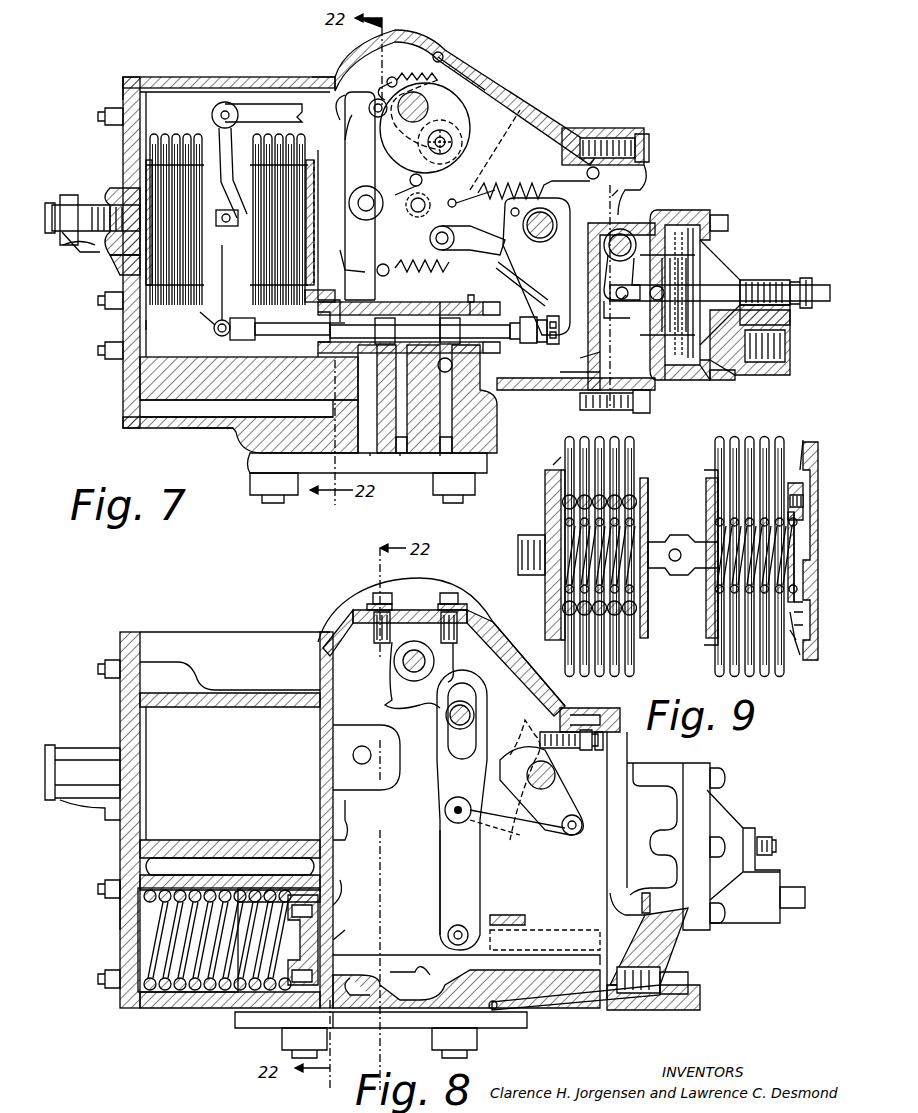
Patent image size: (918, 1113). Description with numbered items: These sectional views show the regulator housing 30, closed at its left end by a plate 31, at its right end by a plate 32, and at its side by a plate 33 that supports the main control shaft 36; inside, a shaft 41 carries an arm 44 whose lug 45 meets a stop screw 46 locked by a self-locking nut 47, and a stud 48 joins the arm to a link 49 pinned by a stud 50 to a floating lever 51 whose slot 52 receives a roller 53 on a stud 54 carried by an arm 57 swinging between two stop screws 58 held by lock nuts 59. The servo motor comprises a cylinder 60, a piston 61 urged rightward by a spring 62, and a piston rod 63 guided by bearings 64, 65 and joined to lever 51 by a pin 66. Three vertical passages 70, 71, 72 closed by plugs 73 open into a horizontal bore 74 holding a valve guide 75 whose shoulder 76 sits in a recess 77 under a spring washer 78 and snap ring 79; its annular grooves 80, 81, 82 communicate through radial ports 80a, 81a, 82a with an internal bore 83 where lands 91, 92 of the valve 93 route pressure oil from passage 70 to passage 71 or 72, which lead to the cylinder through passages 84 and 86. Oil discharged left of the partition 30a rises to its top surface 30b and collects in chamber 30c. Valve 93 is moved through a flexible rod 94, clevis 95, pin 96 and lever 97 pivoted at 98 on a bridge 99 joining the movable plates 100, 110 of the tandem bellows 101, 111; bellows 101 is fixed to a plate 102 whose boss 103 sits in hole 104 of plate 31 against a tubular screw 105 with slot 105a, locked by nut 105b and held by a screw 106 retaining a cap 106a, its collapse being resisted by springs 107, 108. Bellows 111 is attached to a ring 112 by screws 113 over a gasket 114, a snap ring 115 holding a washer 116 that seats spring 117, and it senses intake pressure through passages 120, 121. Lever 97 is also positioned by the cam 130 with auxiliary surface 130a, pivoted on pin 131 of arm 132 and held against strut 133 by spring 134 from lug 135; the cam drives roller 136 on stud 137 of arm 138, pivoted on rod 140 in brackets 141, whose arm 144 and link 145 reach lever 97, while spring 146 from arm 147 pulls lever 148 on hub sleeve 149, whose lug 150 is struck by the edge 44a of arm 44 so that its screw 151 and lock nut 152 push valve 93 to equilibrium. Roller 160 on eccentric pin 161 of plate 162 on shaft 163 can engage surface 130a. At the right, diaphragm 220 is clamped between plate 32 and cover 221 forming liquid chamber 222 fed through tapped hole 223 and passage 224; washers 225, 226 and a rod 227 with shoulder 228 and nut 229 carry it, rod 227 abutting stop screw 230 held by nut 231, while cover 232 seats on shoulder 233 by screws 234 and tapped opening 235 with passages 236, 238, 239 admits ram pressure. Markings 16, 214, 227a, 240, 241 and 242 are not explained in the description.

In FIG. 7, the section line 16 is at (627, 197).
In FIG. 7, the housing 30 is at (510, 392).
In FIG. 8, the housing 30 is at (150, 1008).
In FIG. 7, the housing wall 30a is at (361, 196).
In FIG. 9, the housing wall 30a is at (815, 442).
In FIG. 7, the housing top 30b is at (330, 80).
In FIG. 7, the housing wall 30c is at (150, 325).
In FIG. 7, the housing end wall 31 is at (138, 80).
In FIG. 8, the housing end wall 31 is at (120, 932).
In FIG. 7, the housing body 32 is at (636, 132).
In FIG. 8, the housing body 32 is at (635, 1005).
In FIG. 8, the cover 33 is at (512, 644).
In FIG. 8, the pivot shaft 36 is at (395, 668).
In FIG. 7, the lever pivot 41 is at (560, 205).
In FIG. 8, the lever pivot 41 is at (555, 770).
In FIG. 8, the lever 44 is at (568, 788).
In FIG. 7, the spring 44a is at (538, 186).
In FIG. 8, the lever arm 45 is at (517, 780).
In FIG. 8, the boss 46 is at (568, 708).
In FIG. 8, the screw head 47 is at (594, 748).
In FIG. 8, the pin 48 is at (576, 835).
In FIG. 8, the link 49 is at (515, 835).
In FIG. 8, the pin 50 is at (445, 812).
In FIG. 8, the link 51 is at (440, 845).
In FIG. 8, the bearing 52 is at (450, 725).
In FIG. 8, the link 53 is at (470, 690).
In FIG. 8, the pin 54 is at (450, 715).
In FIG. 8, the arm 57 is at (450, 658).
In FIG. 8, the screw head 58 is at (378, 592).
In FIG. 8, the screw 59 is at (372, 605).
In FIG. 8, the spring 60 is at (215, 992).
In FIG. 8, the spring seat 61 is at (296, 897).
In FIG. 8, the spring retainer 62 is at (200, 895).
In FIG. 8, the wall 63 is at (340, 935).
In FIG. 8, the wall 64 is at (336, 905).
In FIG. 8, the stop 65 is at (528, 912).
In FIG. 8, the pin 66 is at (460, 946).
In FIG. 7, the body 70 is at (398, 375).
In FIG. 7, the body 71 is at (368, 378).
In FIG. 7, the body 72 is at (465, 378).
In FIG. 7, the passages 73 is at (396, 463).
In FIG. 7, the valve stem 74 is at (420, 330).
In FIG. 7, the valve 75 is at (448, 310).
In FIG. 7, the rod 76 is at (318, 315).
In FIG. 7, the wall 77 is at (318, 353).
In FIG. 7, the wall 78 is at (493, 344).
In FIG. 7, the seat 79 is at (497, 305).
In FIG. 7, the plate 80 is at (420, 302).
In FIG. 7, the plate 80a is at (402, 302).
In FIG. 7, the plate 81 is at (400, 315).
In FIG. 7, the plate 81a is at (331, 289).
In FIG. 7, the valve 82 is at (468, 296).
In FIG. 7, the valve seat 82a is at (476, 303).
In FIG. 7, the wall 83 is at (318, 335).
In FIG. 7, the base 84 is at (222, 420).
In FIG. 7, the passage 86 is at (452, 364).
In FIG. 7, the collar 91 is at (385, 331).
In FIG. 7, the collar 92 is at (458, 331).
In FIG. 7, the nut 93 is at (517, 324).
In FIG. 7, the rod 94 is at (292, 321).
In FIG. 7, the block 95 is at (238, 340).
In FIG. 7, the pin 96 is at (211, 330).
In FIG. 7, the arm 97 is at (222, 312).
In FIG. 7, the pin 98 is at (225, 206).
In FIG. 7, the lever 99 is at (240, 170).
In FIG. 9, the lever 99 is at (650, 568).
In FIG. 7, the plate 100 is at (187, 326).
In FIG. 9, the plate 100 is at (645, 478).
In FIG. 7, the fins 101 is at (175, 210).
In FIG. 9, the fins 101 is at (566, 453).
In FIG. 7, the hub 102 is at (148, 160).
In FIG. 9, the hub 102 is at (547, 515).
In FIG. 7, the screw 103 is at (112, 265).
In FIG. 9, the screw 103 is at (518, 554).
In FIG. 7, the boss 104 is at (112, 200).
In FIG. 7, the threaded shaft 105 is at (95, 207).
In FIG. 7, the nut 105a is at (66, 195).
In FIG. 7, the washer 105b is at (80, 250).
In FIG. 7, the screw 106 is at (52, 218).
In FIG. 8, the screw 106 is at (71, 772).
In FIG. 7, the lock 106a is at (63, 246).
In FIG. 8, the lock 106a is at (78, 805).
In FIG. 9, the coils 107 is at (640, 502).
In FIG. 9, the coils 108 is at (638, 523).
In FIG. 7, the hub 110 is at (236, 292).
In FIG. 9, the hub 110 is at (708, 478).
In FIG. 7, the fins 111 is at (266, 204).
In FIG. 9, the fins 111 is at (760, 440).
In FIG. 9, the wall 112 is at (797, 445).
In FIG. 9, the plate 113 is at (785, 500).
In FIG. 9, the screw 114 is at (790, 483).
In FIG. 9, the wall 115 is at (808, 662).
In FIG. 9, the wall 116 is at (795, 655).
In FIG. 9, the coils 117 is at (716, 585).
In FIG. 7, the wall 120 is at (314, 225).
In FIG. 7, the wall 121 is at (326, 303).
In FIG. 8, the wall 121 is at (340, 842).
In FIG. 7, the mechanism 130 is at (495, 148).
In FIG. 7, the cover 130a is at (470, 62).
In FIG. 7, the pin 131 is at (425, 180).
In FIG. 7, the lever 132 is at (405, 135).
In FIG. 7, the pin 133 is at (445, 52).
In FIG. 7, the spring 134 is at (418, 60).
In FIG. 7, the pin 135 is at (390, 78).
In FIG. 7, the cam 136 is at (428, 103).
In FIG. 7, the pin 137 is at (471, 195).
In FIG. 7, the pin 138 is at (408, 215).
In FIG. 7, the shaft 140 is at (374, 203).
In FIG. 7, the arm 141 is at (358, 252).
In FIG. 7, the pivot 144 is at (368, 108).
In FIG. 7, the pivot 145 is at (245, 105).
In FIG. 7, the spring 146 is at (425, 269).
In FIG. 7, the pin 147 is at (396, 275).
In FIG. 7, the lever 148 is at (607, 253).
In FIG. 7, the link 149 is at (528, 272).
In FIG. 7, the lever 150 is at (467, 243).
In FIG. 7, the nut 151 is at (531, 340).
In FIG. 7, the nut 152 is at (555, 338).
In FIG. 7, the shaft 160 is at (445, 130).
In FIG. 7, the pin 161 is at (447, 140).
In FIG. 7, the disc 162 is at (455, 118).
In FIG. 7, the cam 163 is at (452, 148).
In FIG. 7, the wall 214 is at (628, 178).
In FIG. 7, the housing 220 is at (690, 210).
In FIG. 7, the screw 221 is at (715, 213).
In FIG. 7, the diaphragm 222 is at (712, 258).
In FIG. 7, the screw 223 is at (760, 342).
In FIG. 7, the plate 224 is at (725, 372).
In FIG. 7, the plate 225 is at (692, 225).
In FIG. 7, the plate 226 is at (678, 230).
In FIG. 7, the nut 227 is at (778, 310).
In FIG. 7, the stem 227a is at (605, 306).
In FIG. 7, the wall 228 is at (668, 372).
In FIG. 7, the wall 229 is at (706, 380).
In FIG. 7, the screw 230 is at (800, 293).
In FIG. 7, the thread 231 is at (760, 280).
In FIG. 7, the passage 232 is at (575, 357).
In FIG. 8, the passage 232 is at (642, 905).
In FIG. 7, the screw 233 is at (628, 405).
In FIG. 7, the passage 234 is at (564, 371).
In FIG. 8, the fitting 235 is at (660, 980).
In FIG. 8, the passage 236 is at (655, 952).
In FIG. 8, the plate 238 is at (492, 1012).
In FIG. 8, the rod 239 is at (548, 1012).
In FIG. 7, the rod 240 is at (640, 292).
In FIG. 7, the pin 241 is at (615, 290).
In FIG. 7, the spring 242 is at (645, 265).